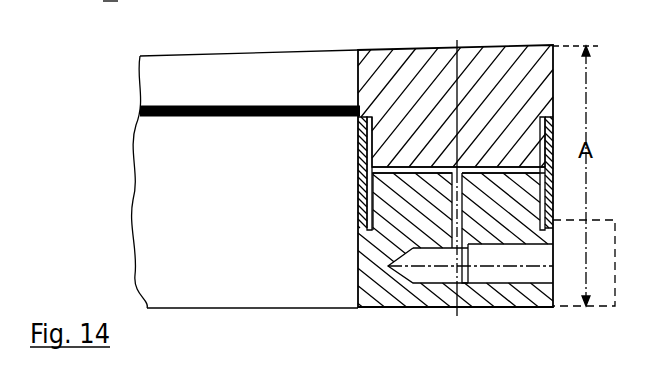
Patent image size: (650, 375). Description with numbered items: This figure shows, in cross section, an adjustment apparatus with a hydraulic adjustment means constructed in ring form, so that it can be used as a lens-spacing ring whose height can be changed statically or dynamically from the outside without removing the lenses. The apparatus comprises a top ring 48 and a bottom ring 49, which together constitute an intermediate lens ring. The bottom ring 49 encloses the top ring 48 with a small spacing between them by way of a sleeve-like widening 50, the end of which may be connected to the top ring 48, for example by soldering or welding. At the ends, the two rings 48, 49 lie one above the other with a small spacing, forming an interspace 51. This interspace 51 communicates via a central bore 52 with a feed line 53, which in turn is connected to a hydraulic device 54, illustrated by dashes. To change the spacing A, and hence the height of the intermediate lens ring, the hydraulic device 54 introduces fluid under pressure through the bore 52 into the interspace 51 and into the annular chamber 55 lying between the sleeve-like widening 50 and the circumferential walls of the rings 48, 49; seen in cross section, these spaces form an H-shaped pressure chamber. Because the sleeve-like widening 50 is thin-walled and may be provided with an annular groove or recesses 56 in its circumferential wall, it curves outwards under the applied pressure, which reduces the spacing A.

The top ring 48 is at (378, 75).
The bottom ring 49 is at (358, 299).
The sleeve-like widening 50 is at (360, 143).
The interspace 51 is at (457, 127).
The central bore 52 is at (471, 310).
The feed line 53 is at (517, 309).
The hydraulic device 54 is at (598, 308).
The annular chamber 55 is at (357, 197).
The annular groove or recesses 56 is at (366, 180).